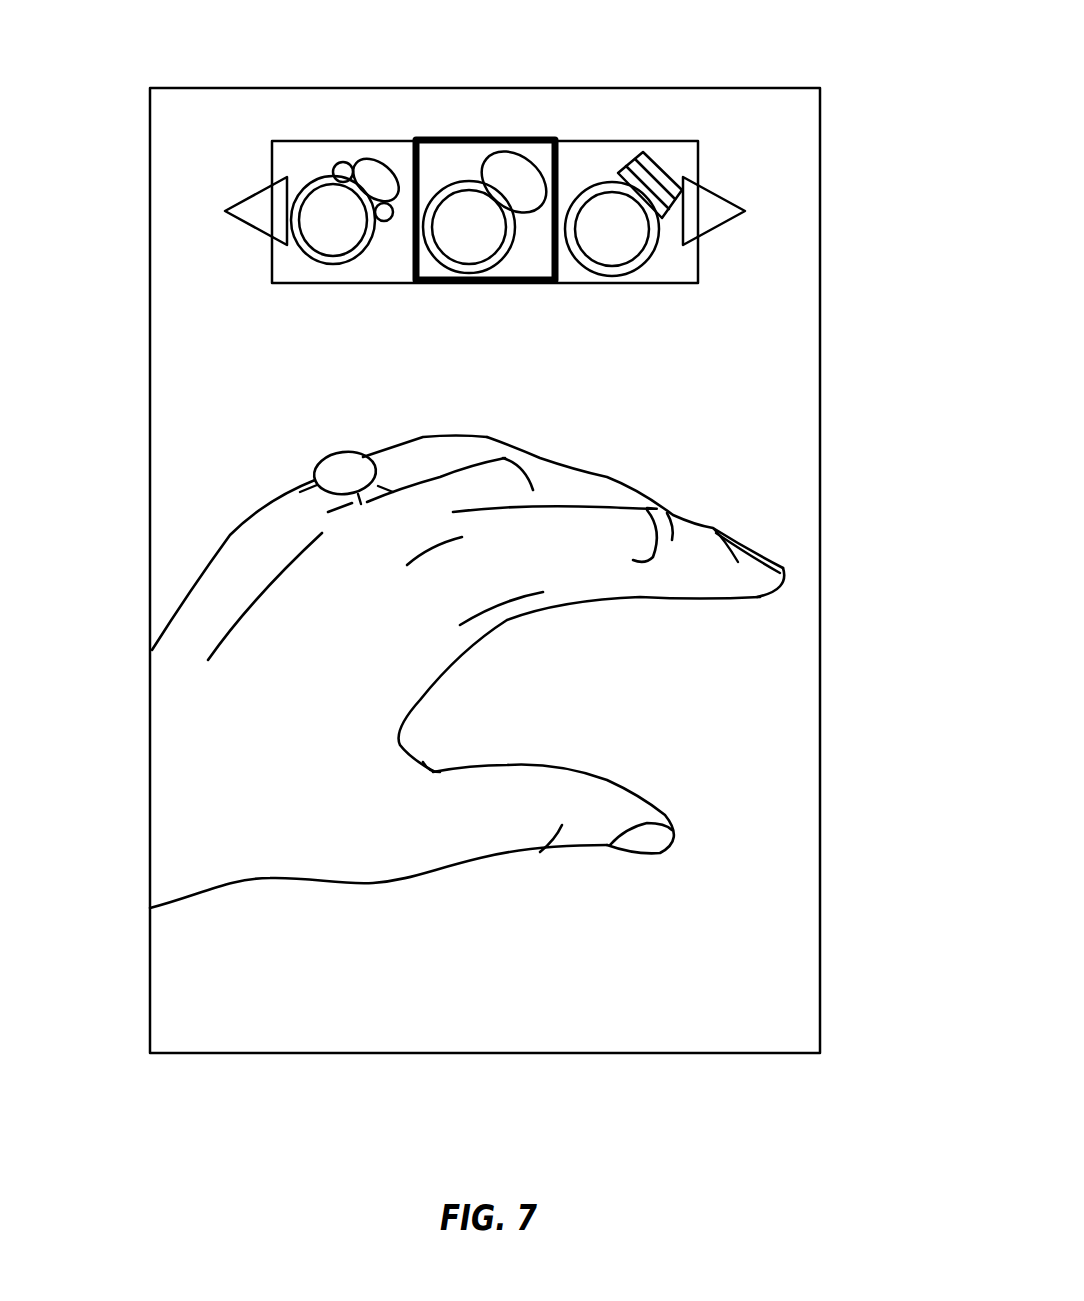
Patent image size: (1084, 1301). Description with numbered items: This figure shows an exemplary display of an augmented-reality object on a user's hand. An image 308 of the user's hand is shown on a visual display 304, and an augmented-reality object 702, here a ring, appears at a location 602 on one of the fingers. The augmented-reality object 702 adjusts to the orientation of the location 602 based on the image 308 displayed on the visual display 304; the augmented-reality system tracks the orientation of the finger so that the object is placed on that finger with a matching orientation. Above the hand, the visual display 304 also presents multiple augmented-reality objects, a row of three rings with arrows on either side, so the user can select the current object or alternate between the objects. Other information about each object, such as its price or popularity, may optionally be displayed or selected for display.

The visual display 304 is at (487, 88).
The augmented-reality object 702 is at (313, 470).
The location 602 is at (313, 482).
The image 308 is at (713, 528).